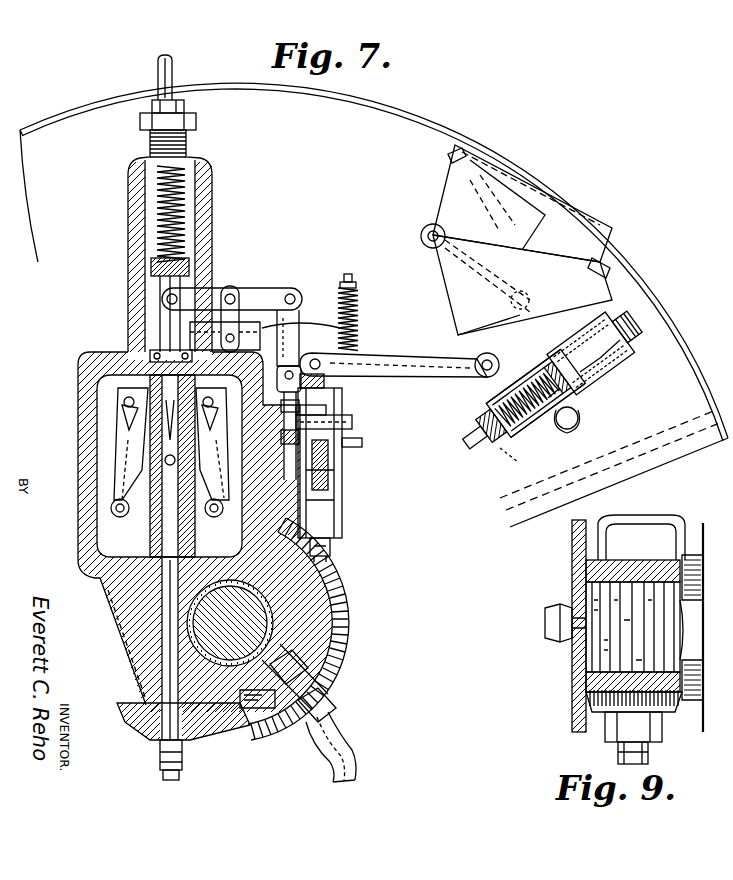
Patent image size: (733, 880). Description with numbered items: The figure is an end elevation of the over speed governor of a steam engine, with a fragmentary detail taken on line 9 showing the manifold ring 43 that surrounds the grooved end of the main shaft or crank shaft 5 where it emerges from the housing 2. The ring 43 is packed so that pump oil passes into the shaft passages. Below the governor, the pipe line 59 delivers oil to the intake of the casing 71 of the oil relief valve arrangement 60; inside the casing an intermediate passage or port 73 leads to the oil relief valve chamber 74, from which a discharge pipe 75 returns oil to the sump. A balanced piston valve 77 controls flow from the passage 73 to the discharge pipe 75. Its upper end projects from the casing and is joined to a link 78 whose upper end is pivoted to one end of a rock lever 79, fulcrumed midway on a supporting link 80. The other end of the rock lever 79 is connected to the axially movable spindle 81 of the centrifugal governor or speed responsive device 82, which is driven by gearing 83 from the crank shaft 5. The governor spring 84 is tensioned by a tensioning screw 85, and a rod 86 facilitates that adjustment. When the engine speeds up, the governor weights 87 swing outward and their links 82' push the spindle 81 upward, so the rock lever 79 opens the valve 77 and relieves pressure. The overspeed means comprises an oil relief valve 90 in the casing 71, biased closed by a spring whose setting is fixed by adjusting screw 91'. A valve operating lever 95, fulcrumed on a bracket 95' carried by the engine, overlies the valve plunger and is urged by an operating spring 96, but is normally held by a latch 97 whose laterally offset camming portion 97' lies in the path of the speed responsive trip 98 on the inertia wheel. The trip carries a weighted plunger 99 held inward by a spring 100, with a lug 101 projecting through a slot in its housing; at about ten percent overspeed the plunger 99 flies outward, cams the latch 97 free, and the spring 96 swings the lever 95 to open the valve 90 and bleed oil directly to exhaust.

In FIG. 7, the housing 2 is at (730, 133).
In FIG. 7, the main shaft or crank shaft 5 is at (248, 622).
In FIG. 9, the main shaft or crank shaft 5 is at (690, 622).
In FIG. 7, the section line 9— 9 is at (232, 504).
In FIG. 9, the distributing or manifold ring 43 is at (640, 565).
In FIG. 7, the pipe line 59 is at (355, 442).
In FIG. 7, the oil relief valve arrangement 60 is at (346, 405).
In FIG. 7, the casing 71 is at (330, 500).
In FIG. 7, the intermediate passage or port 73 is at (318, 398).
In FIG. 7, the oil relief valve chamber 74 is at (276, 436).
In FIG. 7, the discharge pipe 75 is at (330, 468).
In FIG. 7, the balanced piston valve 77 is at (204, 470).
In FIG. 7, the link 78 is at (296, 322).
In FIG. 7, the rock lever 79 is at (262, 290).
In FIG. 7, the supporting link 80 is at (232, 312).
In FIG. 7, the governor spindle 81 is at (160, 290).
In FIG. 7, the centrifugal governor or speed responsive device 82 is at (143, 447).
In FIG. 7, the links 82' is at (94, 452).
In FIG. 7, the gearing 83 is at (210, 742).
In FIG. 9, the gearing 83 is at (595, 722).
In FIG. 7, the governor spring 84 is at (180, 228).
In FIG. 7, the tensioning screw 85 is at (186, 104).
In FIG. 7, the rod 86 is at (172, 70).
In FIG. 7, the governor weights 87 is at (112, 462).
In FIG. 7, the oil relief valve 90 is at (354, 420).
In FIG. 7, the adjusting screw 91' is at (340, 538).
In FIG. 7, the valve operating lever 95 is at (399, 349).
In FIG. 7, the bracket 95' is at (516, 211).
In FIG. 7, the operating spring 96 is at (360, 310).
In FIG. 7, the latch 97 is at (522, 255).
In FIG. 7, the laterally offset camming portion 97' is at (623, 361).
In FIG. 7, the speed responsive trip 98 is at (516, 456).
In FIG. 7, the weighted plunger 99 is at (540, 432).
In FIG. 7, the spring 100 is at (524, 440).
In FIG. 7, the lug 101 is at (585, 384).